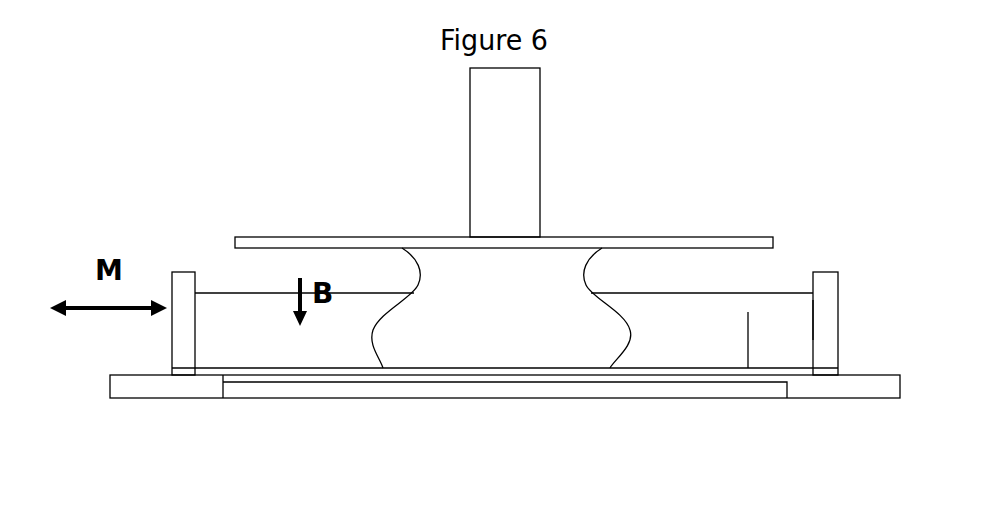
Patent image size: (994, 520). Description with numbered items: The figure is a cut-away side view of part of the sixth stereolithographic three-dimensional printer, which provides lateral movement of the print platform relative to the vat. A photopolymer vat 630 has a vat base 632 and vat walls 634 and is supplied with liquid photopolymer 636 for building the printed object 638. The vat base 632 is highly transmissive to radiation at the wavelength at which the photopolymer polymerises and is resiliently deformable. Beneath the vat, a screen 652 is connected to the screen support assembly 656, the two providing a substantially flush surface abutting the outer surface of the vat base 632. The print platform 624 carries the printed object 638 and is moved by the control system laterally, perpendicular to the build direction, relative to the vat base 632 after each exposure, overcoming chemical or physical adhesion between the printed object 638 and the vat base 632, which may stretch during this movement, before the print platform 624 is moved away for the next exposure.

The print platform 624 is at (592, 237).
The photopolymer vat 630 is at (838, 272).
The vat base 632 is at (748, 314).
The vat walls 634 is at (823, 317).
The liquid photopolymer 636 is at (235, 333).
The 3D printed object 638 is at (520, 327).
The screen 652 is at (667, 398).
The screen support assembly 656 is at (120, 390).